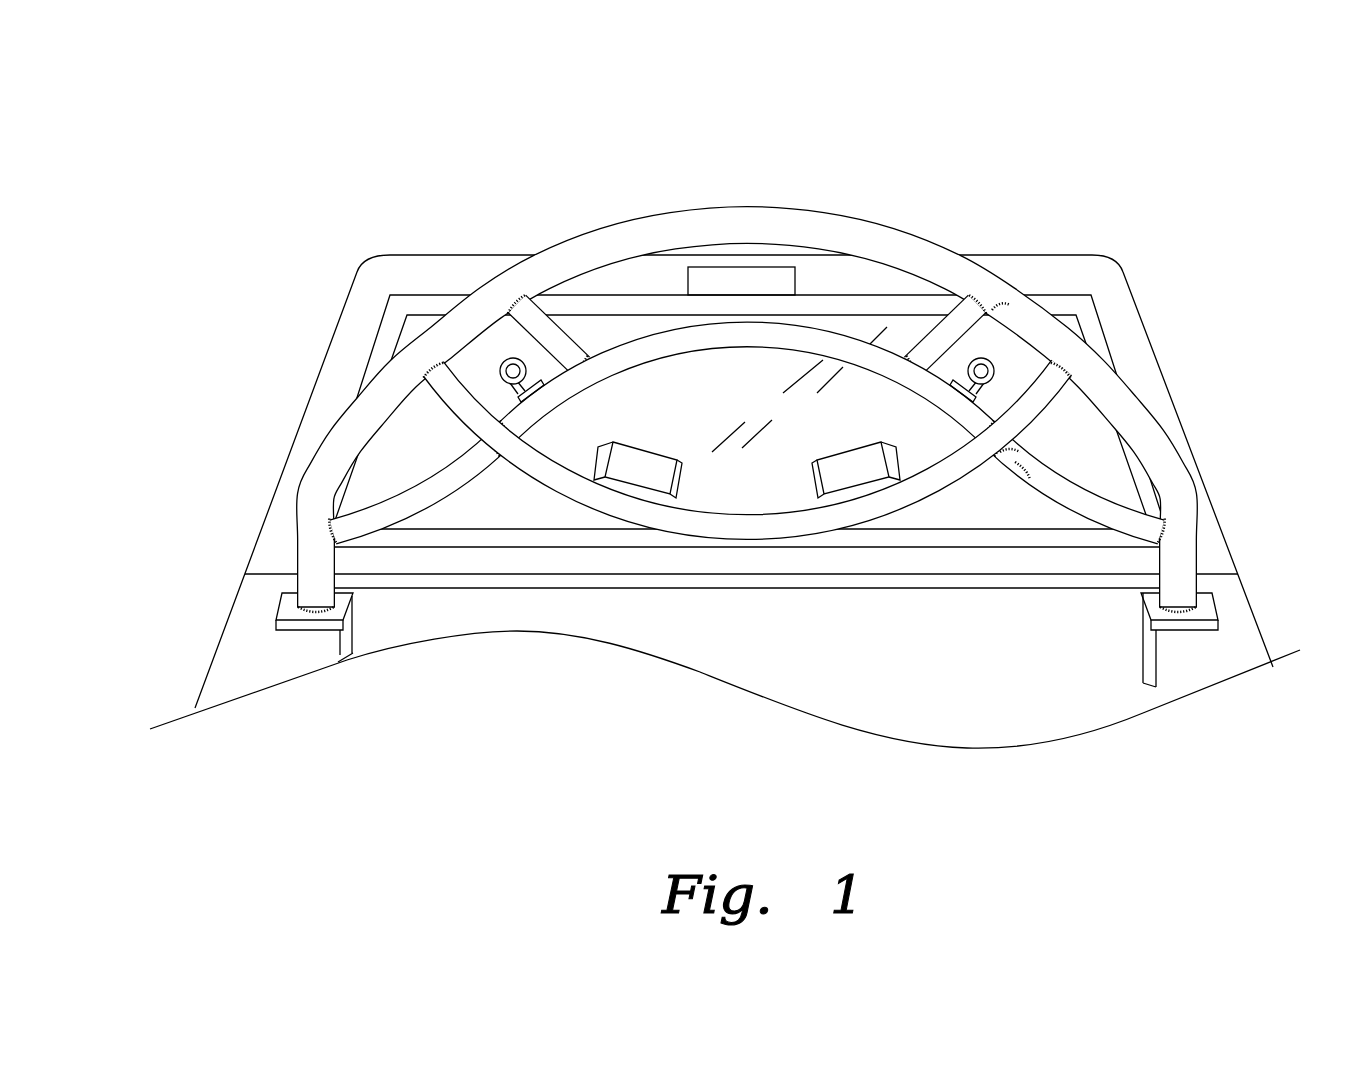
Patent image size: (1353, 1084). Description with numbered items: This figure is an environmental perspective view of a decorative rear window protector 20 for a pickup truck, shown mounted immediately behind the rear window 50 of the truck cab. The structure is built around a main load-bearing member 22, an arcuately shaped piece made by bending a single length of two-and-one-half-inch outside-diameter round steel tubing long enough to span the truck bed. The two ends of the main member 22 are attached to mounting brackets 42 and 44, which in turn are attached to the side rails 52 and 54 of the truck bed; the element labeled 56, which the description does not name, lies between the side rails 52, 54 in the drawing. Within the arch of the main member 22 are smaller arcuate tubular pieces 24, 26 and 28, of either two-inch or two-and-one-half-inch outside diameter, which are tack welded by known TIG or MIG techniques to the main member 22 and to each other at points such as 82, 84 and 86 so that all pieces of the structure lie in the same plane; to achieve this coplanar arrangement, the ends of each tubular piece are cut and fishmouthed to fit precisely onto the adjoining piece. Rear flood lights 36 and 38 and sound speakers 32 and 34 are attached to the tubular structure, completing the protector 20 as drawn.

The rear window protector 20 is at (778, 370).
The main load-bearing member 22 is at (987, 297).
The smaller arcuate tubular piece 24 is at (935, 478).
The smaller arcuate tubular piece 26 is at (642, 348).
The smaller arcuate tubular piece 28 is at (543, 340).
The rear window 50 is at (1099, 310).
The rear flood light 36 is at (497, 364).
The rear flood light 38 is at (1057, 357).
The sound speaker 32 is at (645, 472).
The sound speaker 34 is at (847, 472).
The mounting bracket 42 is at (295, 605).
The mounting bracket 44 is at (1150, 612).
The side rail 52 is at (255, 668).
The side rail 54 is at (1225, 645).
The hood 56 is at (886, 690).
The weld point 82 is at (1033, 435).
The weld point 84 is at (1033, 470).
The weld point 86 is at (990, 318).